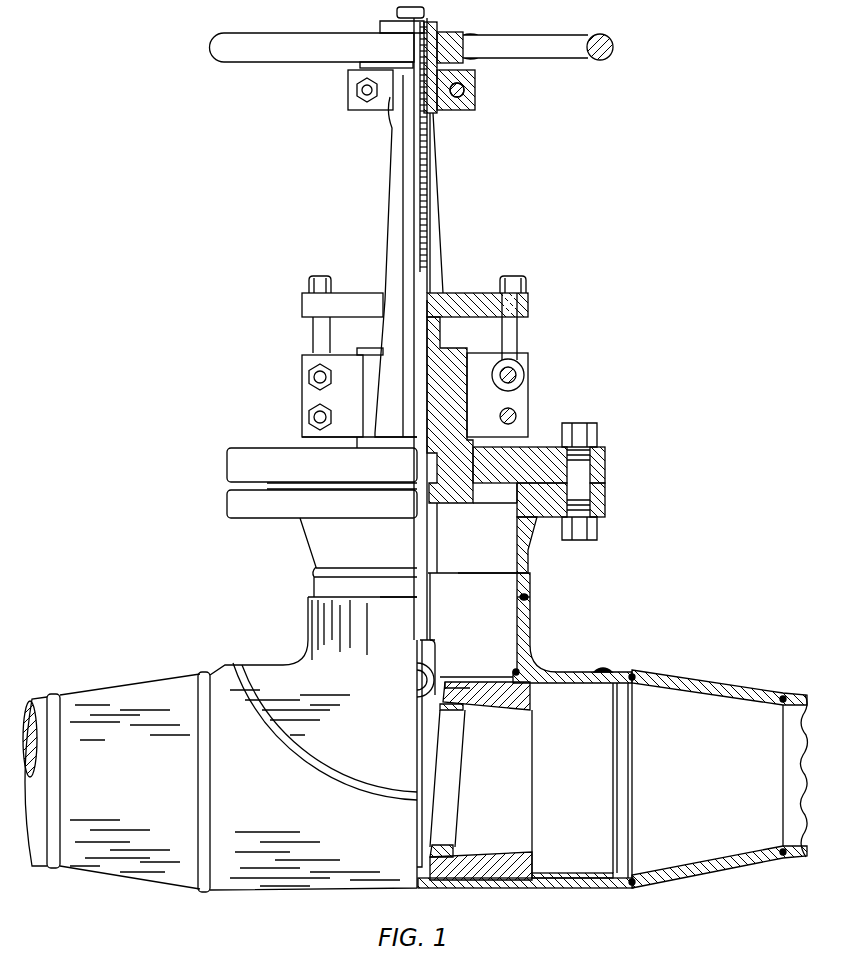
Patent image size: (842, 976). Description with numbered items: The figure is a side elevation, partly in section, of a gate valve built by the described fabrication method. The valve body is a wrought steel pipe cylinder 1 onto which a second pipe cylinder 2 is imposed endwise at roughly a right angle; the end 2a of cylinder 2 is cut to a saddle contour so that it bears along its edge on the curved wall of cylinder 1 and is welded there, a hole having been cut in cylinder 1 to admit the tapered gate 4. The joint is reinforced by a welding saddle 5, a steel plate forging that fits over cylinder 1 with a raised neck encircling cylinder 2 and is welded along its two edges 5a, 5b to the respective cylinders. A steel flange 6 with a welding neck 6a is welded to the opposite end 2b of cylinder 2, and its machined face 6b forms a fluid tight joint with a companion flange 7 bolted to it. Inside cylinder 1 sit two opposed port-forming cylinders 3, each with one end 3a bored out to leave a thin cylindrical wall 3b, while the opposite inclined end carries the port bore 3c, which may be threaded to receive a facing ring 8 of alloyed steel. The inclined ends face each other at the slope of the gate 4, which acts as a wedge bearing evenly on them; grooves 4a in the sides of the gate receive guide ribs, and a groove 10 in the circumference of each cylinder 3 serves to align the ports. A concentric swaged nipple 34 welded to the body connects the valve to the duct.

The pipe cylinder 1 is at (540, 890).
The pipe cylinder 2 is at (312, 586).
The end of imposed cylinder 2a is at (515, 668).
The end of cylinder 2 2b is at (468, 574).
The port-forming cylinder 3 is at (487, 777).
The end of port-forming cylinder 3a is at (612, 746).
The thin cylindrical wall 3b is at (548, 873).
The bore 3c is at (482, 853).
The tapered gate 4 is at (423, 830).
The groove 4a is at (427, 790).
The welding saddle 5 is at (538, 618).
The edge of welding saddle 5a is at (615, 655).
The edge of welding saddle 5b is at (382, 600).
The steel flange 6 is at (606, 502).
The welding neck 6a is at (532, 555).
The machined face 6b is at (516, 500).
The companion flange 7 is at (606, 461).
The facing ring 8 is at (447, 783).
The groove 10 is at (468, 668).
The concentric swaged nipple 34 is at (713, 680).